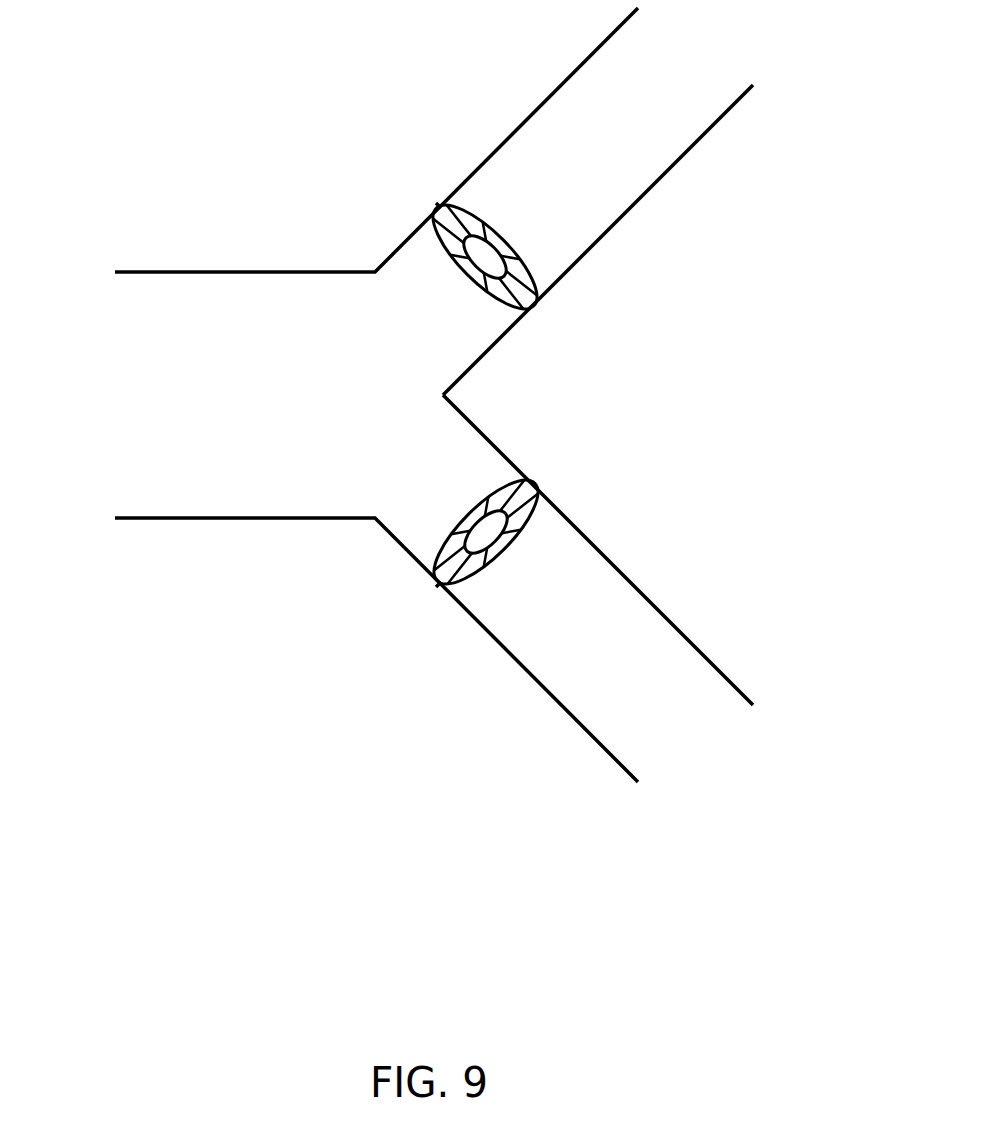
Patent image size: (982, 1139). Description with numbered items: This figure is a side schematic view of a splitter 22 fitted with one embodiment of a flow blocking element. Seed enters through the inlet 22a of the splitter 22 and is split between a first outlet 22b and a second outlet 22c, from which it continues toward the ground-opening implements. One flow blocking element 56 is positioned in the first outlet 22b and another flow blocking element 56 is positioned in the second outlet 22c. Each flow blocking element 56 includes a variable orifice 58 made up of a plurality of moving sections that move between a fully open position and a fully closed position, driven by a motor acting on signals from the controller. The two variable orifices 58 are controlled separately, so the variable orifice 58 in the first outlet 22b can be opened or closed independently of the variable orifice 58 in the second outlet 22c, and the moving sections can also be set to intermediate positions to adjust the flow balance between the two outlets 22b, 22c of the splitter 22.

The splitter 22 is at (439, 395).
The inlet 22a is at (157, 272).
The first outlet 22b is at (693, 643).
The second outlet 22c is at (693, 147).
The flow blocking element 56 is at (439, 200).
The variable orifice 58 is at (478, 290).